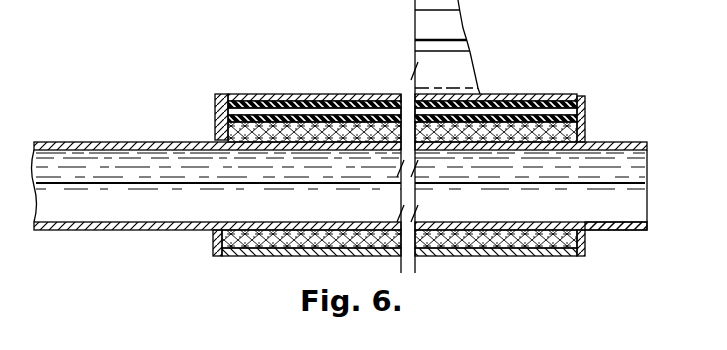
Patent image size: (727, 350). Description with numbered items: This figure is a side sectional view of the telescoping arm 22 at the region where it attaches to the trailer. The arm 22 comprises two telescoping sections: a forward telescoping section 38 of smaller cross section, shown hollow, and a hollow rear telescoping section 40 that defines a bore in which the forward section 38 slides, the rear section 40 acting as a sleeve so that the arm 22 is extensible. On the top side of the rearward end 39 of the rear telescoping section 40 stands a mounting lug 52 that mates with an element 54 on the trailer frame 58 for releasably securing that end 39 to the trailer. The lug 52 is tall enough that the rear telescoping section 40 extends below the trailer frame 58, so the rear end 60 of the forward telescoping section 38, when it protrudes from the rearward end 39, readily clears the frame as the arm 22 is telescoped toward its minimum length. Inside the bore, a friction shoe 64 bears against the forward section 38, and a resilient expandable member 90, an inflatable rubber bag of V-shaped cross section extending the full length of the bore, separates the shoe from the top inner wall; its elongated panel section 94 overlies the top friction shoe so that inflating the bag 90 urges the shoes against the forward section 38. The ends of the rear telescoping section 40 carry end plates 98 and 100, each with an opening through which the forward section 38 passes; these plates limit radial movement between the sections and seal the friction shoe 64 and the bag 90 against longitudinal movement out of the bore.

The arm 22 is at (408, 169).
The forward telescoping section 38 is at (147, 142).
The rearward end of the rear telescoping section 39 is at (542, 250).
The rear telescoping section 40 is at (311, 94).
The mounting lug 52 is at (468, 78).
The element on the trailer frame 54 is at (463, 47).
The trailer frame 58 is at (458, 30).
The rear end of the forward telescoping section 60 is at (606, 231).
The friction shoe 64 is at (503, 114).
The resilient expandable member 90 is at (357, 95).
The elongated panel section 94 is at (389, 94).
The end plate 98 is at (215, 112).
The end plate 100 is at (586, 113).